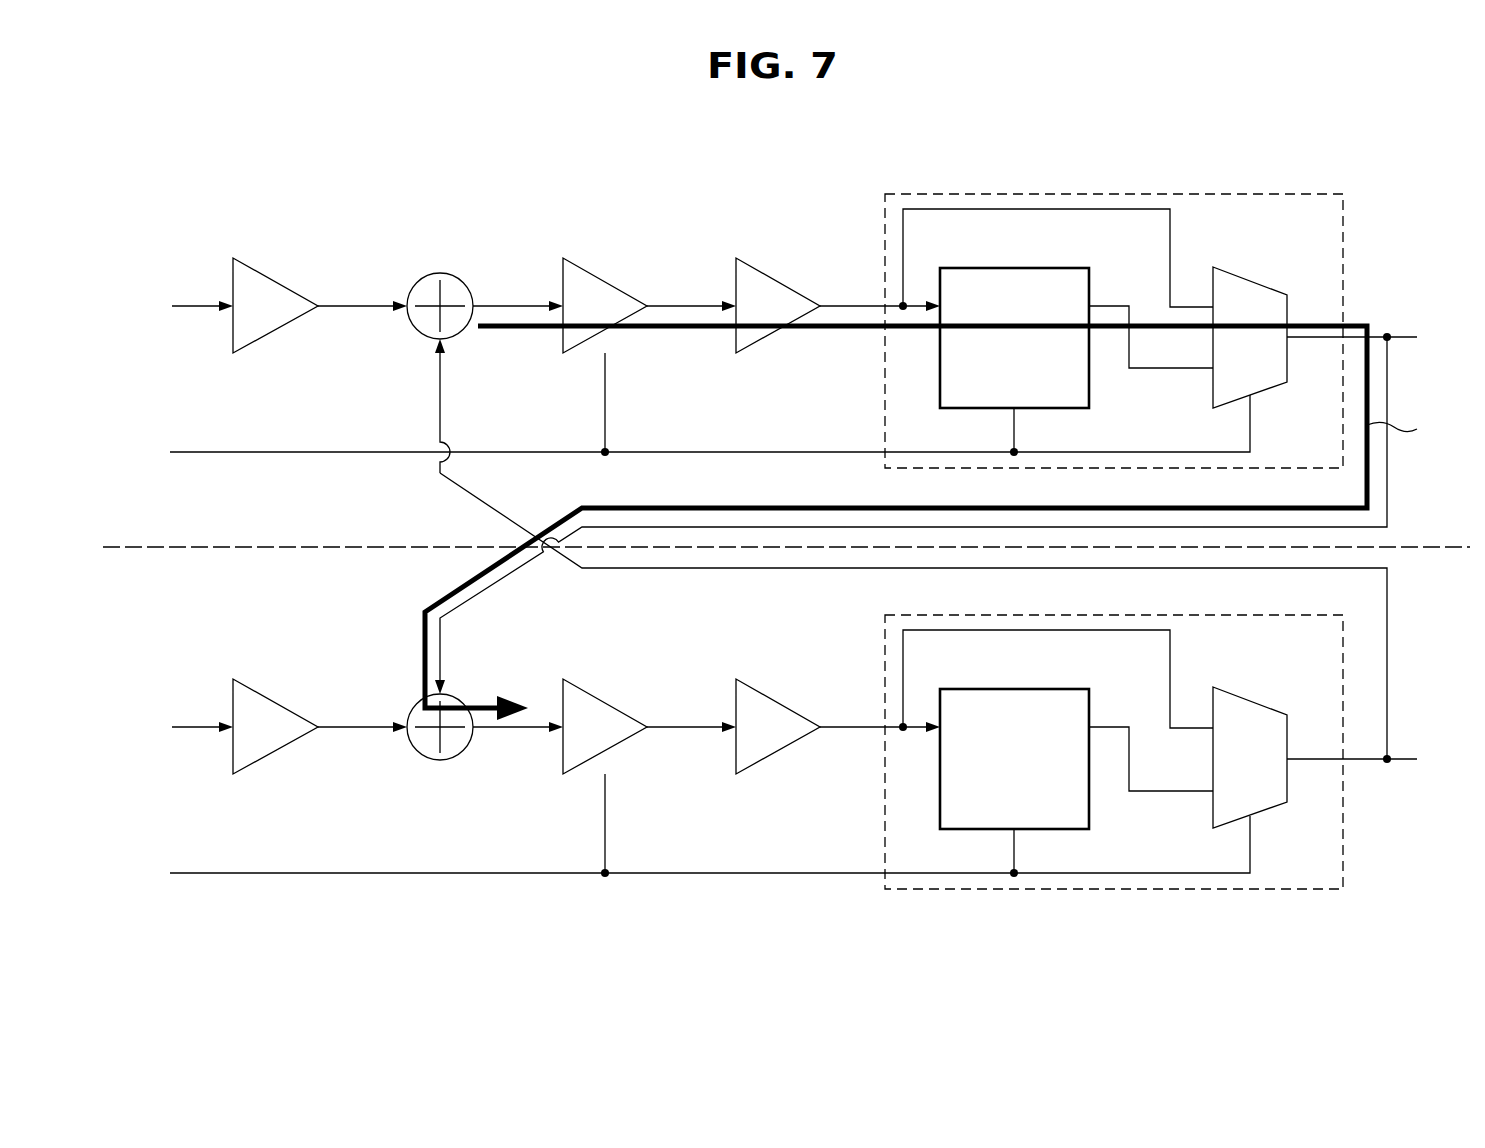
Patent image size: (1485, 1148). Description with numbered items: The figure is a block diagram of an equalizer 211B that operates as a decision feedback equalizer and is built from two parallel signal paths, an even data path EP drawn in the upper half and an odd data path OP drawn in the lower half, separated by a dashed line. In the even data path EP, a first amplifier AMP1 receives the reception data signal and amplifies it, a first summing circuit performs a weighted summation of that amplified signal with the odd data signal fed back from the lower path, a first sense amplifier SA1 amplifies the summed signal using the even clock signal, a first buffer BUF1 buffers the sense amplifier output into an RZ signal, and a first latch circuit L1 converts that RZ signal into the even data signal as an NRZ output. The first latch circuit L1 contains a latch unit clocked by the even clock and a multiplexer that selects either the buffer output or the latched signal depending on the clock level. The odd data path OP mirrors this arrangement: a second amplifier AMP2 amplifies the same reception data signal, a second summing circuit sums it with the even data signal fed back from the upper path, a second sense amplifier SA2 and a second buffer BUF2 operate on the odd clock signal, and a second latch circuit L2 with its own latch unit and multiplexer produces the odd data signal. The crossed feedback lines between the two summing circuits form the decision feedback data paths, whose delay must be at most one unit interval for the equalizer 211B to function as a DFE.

The equalizer 211B is at (1335, 99).
The even data path EP is at (1338, 168).
The odd data path OP is at (1338, 908).
The first amplifier AMP1 is at (254, 270).
The second amplifier AMP2 is at (254, 691).
The first sense amplifier SA1 is at (585, 270).
The second sense amplifier SA2 is at (585, 694).
The first buffer BUF1 is at (757, 270).
The second buffer BUF2 is at (757, 691).
The first latch circuit L1 is at (1253, 195).
The second latch circuit L2 is at (1253, 615).